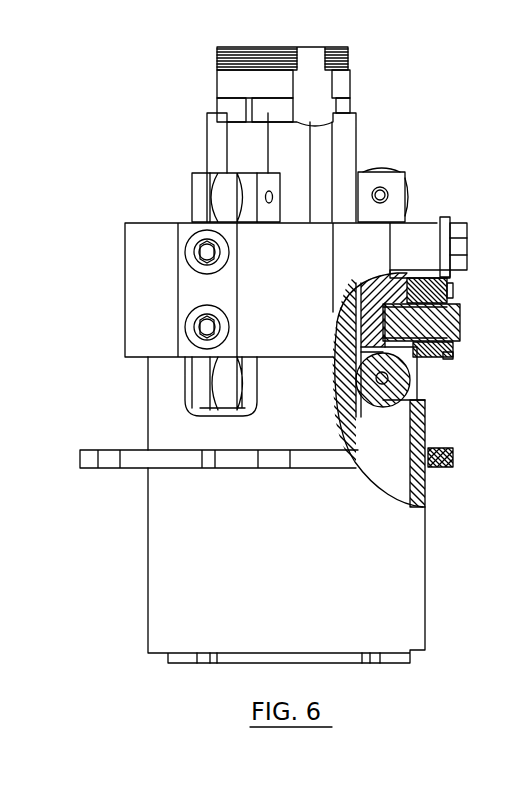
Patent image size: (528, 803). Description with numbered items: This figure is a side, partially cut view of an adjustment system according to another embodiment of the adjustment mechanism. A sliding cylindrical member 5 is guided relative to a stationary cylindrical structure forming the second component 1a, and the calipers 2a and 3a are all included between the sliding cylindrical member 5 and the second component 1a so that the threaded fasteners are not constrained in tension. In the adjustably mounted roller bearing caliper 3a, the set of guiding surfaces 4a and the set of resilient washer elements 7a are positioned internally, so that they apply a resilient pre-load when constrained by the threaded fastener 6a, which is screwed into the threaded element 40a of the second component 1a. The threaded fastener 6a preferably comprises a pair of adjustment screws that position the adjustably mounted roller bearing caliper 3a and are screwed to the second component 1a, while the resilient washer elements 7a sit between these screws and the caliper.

The second component 1a is at (144, 242).
The caliper 2a is at (200, 182).
The adjustably mounted roller bearing caliper 3a is at (395, 180).
The set of guiding surfaces 4a is at (392, 300).
The sliding cylindrical member 5 is at (218, 126).
The threaded fastener 6a is at (463, 326).
The set of resilient washer elements 7a is at (360, 338).
The threaded element 40a is at (430, 357).